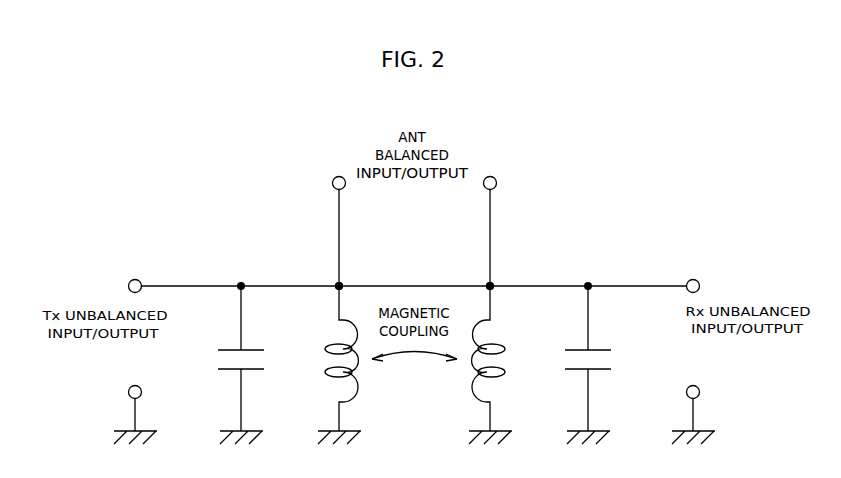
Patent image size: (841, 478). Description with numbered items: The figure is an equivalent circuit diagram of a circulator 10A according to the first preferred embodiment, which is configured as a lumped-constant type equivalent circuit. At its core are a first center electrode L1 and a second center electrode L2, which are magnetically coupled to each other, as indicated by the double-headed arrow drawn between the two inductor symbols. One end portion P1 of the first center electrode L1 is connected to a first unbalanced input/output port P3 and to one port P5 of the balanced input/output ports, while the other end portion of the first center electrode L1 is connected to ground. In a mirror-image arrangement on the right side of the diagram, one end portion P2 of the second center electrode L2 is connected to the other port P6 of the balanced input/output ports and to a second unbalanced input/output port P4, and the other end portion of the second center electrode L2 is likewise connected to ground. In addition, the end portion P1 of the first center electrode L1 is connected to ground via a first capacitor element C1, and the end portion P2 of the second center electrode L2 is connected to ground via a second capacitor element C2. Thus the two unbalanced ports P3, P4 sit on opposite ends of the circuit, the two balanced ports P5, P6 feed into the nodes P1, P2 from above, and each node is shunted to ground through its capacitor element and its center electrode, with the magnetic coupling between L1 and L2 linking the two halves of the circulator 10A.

The circulator 10A is at (228, 190).
The end portion of the first center electrode P1 is at (357, 277).
The end portion of the second center electrode P2 is at (472, 279).
The first unbalanced input/output port P3 is at (135, 270).
The second unbalanced input/output port P4 is at (693, 267).
The balanced input/output port P5 is at (336, 167).
The balanced input/output port P6 is at (489, 168).
The first capacitor element C1 is at (225, 365).
The second capacitor element C2 is at (604, 365).
The first center electrode L1 is at (326, 365).
The second center electrode L2 is at (503, 365).